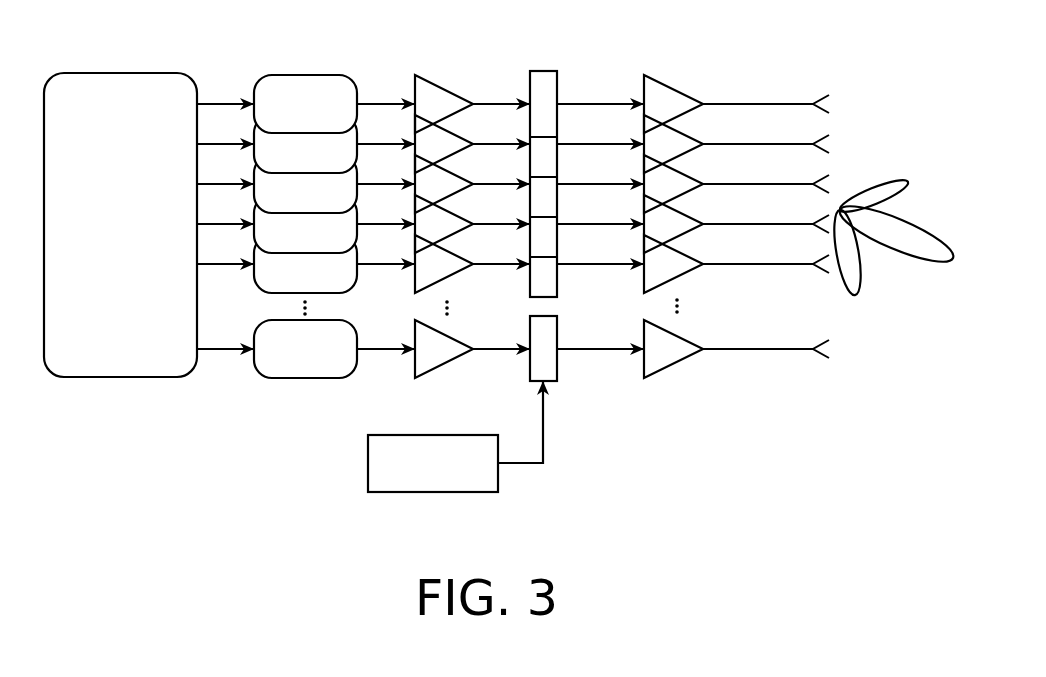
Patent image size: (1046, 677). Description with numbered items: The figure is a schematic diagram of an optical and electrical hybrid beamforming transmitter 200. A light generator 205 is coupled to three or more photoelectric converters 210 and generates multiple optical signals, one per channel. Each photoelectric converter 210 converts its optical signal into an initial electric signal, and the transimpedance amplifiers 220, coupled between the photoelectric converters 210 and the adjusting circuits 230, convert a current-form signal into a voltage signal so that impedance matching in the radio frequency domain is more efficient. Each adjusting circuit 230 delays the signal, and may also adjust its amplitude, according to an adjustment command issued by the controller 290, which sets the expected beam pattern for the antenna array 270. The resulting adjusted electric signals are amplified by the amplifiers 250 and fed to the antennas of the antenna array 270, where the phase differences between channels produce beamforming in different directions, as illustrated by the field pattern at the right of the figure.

The optical and electrical hybrid beamforming transmitter 200 is at (895, 518).
The light generator 205 is at (120, 73).
The photoelectric converters 210 is at (307, 75).
The transimpedance amplifiers 220 is at (423, 76).
The adjusting circuits 230 is at (545, 71).
The amplifiers 250 is at (656, 76).
The antenna array 270 is at (824, 97).
The controller 290 is at (368, 462).